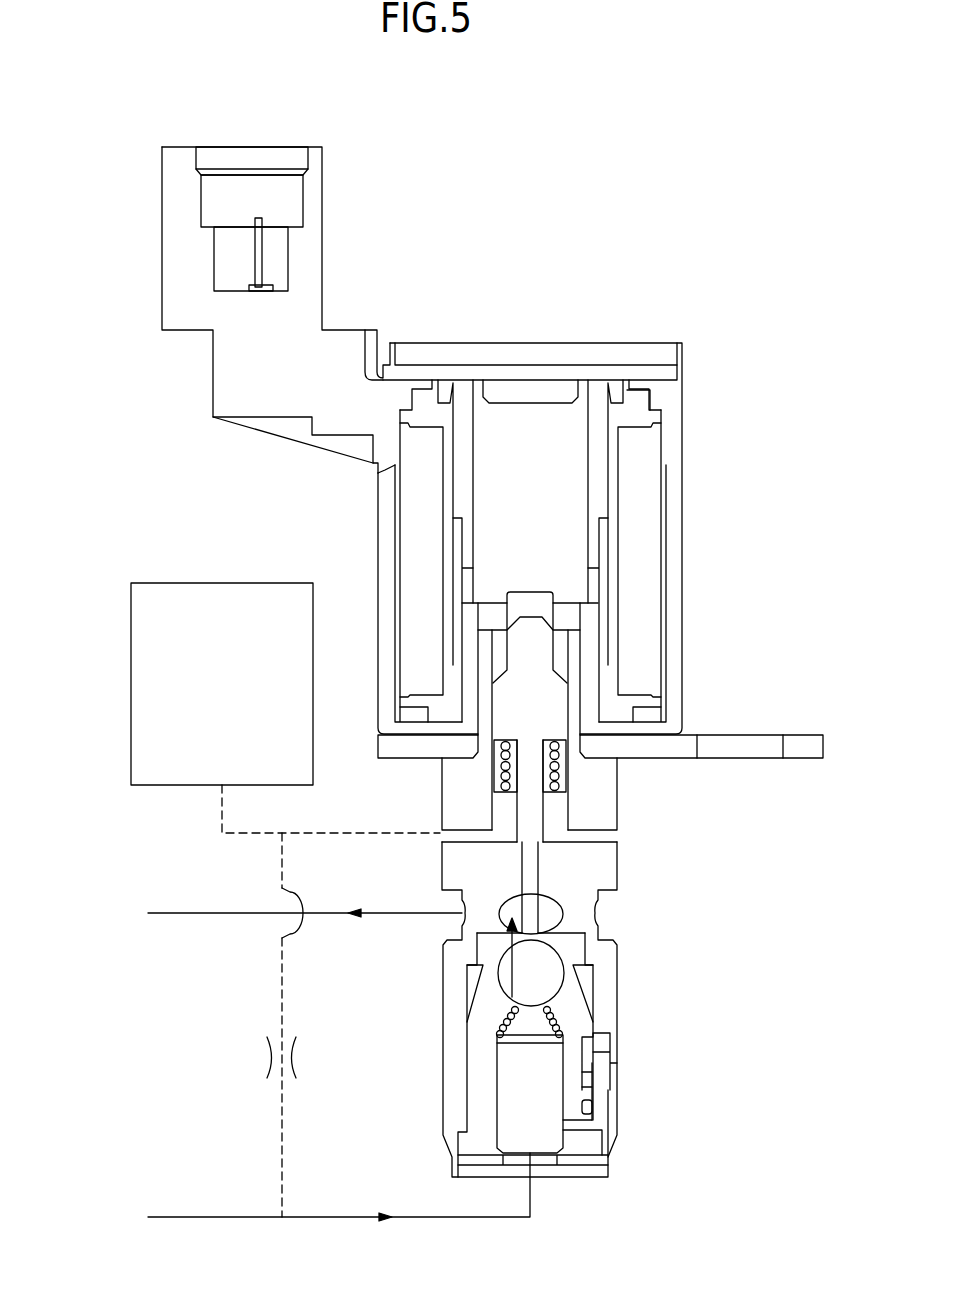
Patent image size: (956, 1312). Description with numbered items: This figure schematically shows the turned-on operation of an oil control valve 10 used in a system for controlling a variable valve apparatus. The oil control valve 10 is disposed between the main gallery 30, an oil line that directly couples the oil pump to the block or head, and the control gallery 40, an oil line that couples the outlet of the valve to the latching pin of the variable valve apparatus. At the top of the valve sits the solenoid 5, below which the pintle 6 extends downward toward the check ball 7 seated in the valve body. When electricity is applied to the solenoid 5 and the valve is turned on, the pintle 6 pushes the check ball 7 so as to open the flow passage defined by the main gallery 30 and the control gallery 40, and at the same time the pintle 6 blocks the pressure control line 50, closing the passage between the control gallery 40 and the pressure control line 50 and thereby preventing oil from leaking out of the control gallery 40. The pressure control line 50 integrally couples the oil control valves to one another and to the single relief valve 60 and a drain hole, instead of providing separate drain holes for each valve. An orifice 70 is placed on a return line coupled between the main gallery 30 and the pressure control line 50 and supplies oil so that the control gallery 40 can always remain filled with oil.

The solenoid 5 is at (638, 512).
The pintle 6 is at (532, 695).
The check ball 7 is at (537, 970).
The valve body 10 is at (625, 1055).
The main gallery 30 is at (213, 1217).
The control gallery 40 is at (208, 913).
The pressure control line 50 is at (250, 833).
The relief valve 60 is at (177, 605).
The orifice 70 is at (268, 1057).